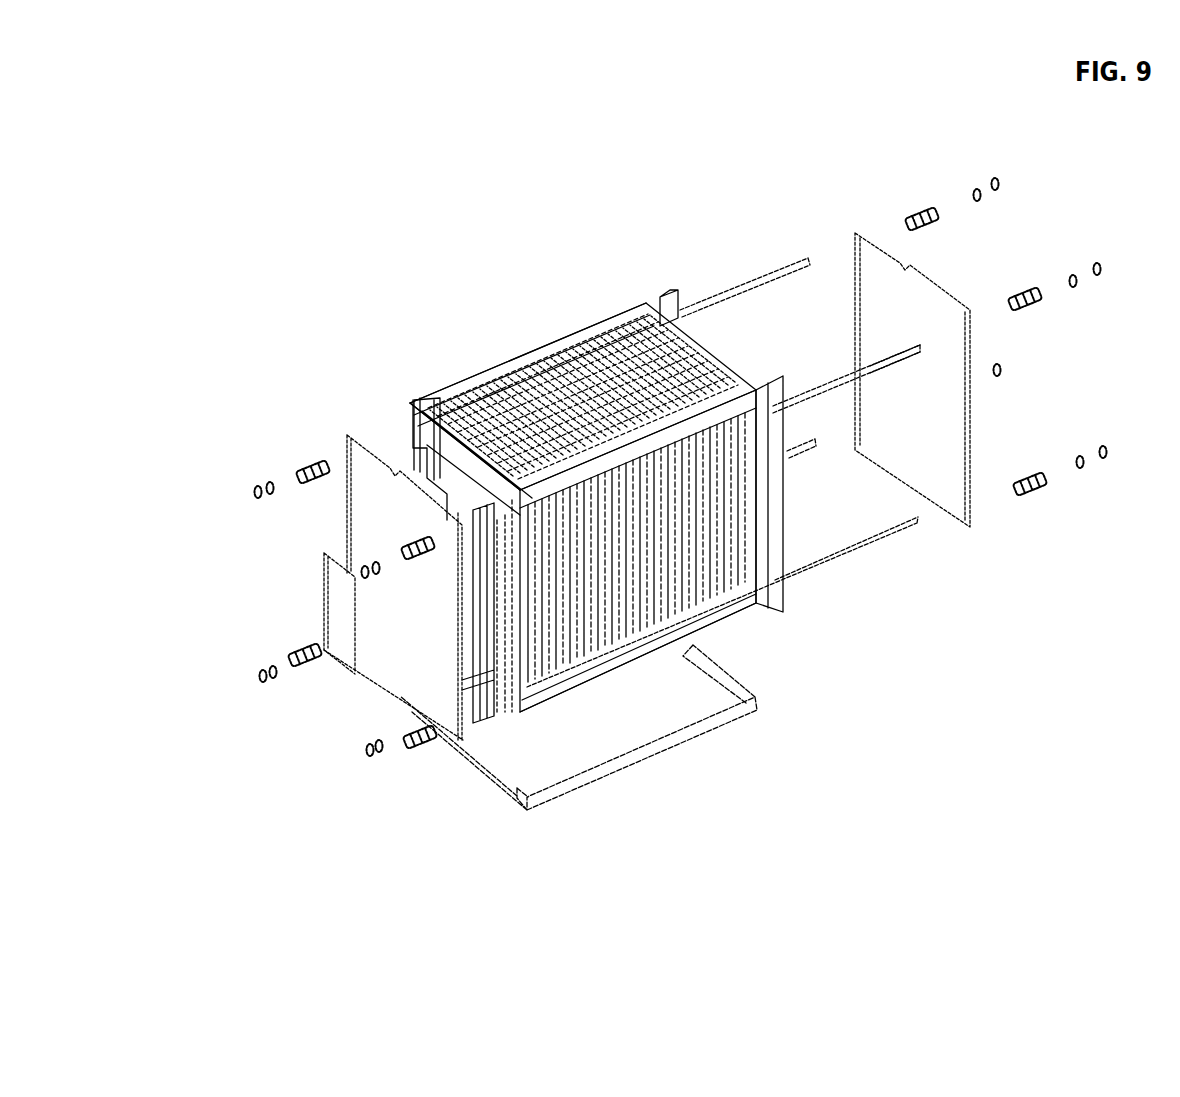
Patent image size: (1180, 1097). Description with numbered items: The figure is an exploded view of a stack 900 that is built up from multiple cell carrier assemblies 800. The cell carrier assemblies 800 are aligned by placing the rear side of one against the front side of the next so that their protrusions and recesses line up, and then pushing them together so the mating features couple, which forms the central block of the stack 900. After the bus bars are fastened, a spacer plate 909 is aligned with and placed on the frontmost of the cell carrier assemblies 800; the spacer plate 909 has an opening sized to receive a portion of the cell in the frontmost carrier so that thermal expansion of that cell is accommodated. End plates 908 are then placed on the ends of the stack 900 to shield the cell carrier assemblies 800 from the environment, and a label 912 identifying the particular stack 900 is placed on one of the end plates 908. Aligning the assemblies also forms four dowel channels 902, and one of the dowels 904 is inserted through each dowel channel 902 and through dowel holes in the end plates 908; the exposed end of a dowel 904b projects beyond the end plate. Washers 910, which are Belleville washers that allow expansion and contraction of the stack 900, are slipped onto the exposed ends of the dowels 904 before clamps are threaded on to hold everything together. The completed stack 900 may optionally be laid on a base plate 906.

The stack 900 is at (550, 208).
The cell carrier assembly 800 is at (660, 281).
The dowel channel 902 is at (580, 667).
The dowel 904 is at (795, 267).
The tie rod end 904b is at (897, 352).
The base plate 906 is at (505, 788).
The end plate 908 is at (380, 665).
The spacer plate 909 is at (473, 703).
The washer 910 is at (309, 443).
The label 912 is at (343, 600).